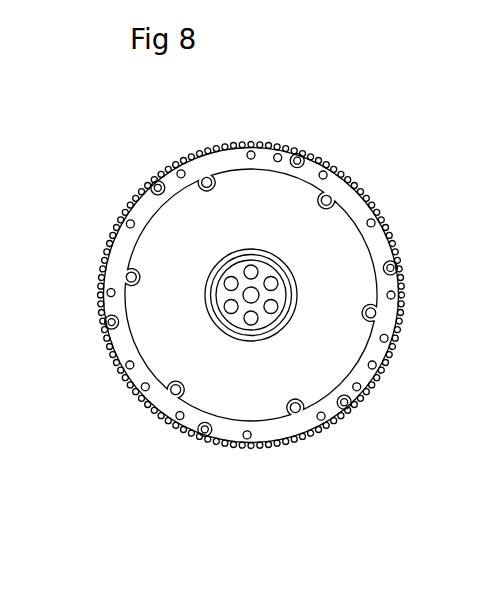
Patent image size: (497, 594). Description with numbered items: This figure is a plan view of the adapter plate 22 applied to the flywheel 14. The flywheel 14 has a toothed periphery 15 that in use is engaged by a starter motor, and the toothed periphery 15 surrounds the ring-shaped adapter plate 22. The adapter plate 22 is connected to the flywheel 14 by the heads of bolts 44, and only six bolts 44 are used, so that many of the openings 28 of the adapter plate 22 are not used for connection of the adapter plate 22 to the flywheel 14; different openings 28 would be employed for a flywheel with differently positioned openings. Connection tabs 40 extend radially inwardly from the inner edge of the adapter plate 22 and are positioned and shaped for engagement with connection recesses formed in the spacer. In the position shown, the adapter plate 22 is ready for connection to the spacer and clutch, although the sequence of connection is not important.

The flywheel 14 is at (272, 225).
The toothed periphery 15 is at (329, 169).
The adapter plate 22 is at (355, 200).
The openings 28 is at (222, 152).
The connection tabs 40 is at (203, 186).
The bolts 44 is at (386, 272).